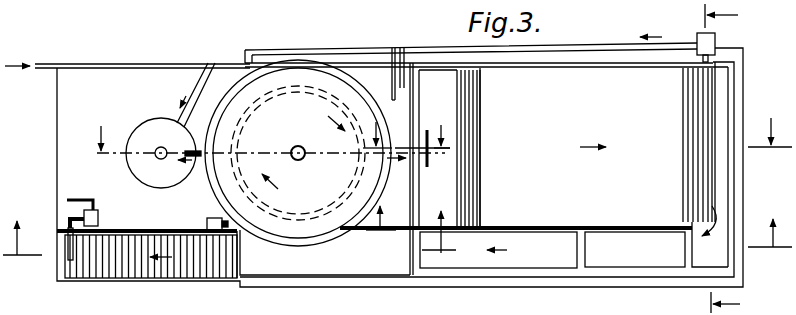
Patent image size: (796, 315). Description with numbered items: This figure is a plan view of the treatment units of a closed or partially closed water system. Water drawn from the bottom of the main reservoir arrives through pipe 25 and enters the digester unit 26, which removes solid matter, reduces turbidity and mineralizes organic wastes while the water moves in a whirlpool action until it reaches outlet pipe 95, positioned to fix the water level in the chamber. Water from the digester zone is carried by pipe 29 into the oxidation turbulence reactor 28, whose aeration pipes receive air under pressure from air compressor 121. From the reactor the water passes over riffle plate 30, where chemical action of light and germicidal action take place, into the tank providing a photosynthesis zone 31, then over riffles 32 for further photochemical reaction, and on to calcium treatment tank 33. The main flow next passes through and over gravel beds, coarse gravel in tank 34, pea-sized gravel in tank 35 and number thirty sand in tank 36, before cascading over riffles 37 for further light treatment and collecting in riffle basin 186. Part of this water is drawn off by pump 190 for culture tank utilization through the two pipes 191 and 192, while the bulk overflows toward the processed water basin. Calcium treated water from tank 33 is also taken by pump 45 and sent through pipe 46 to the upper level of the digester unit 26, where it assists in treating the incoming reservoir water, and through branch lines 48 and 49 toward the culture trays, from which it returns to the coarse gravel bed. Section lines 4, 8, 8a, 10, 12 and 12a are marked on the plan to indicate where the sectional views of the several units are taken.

The pipe 25 is at (162, 64).
The digester unit 26 is at (240, 94).
The pipe 46 is at (262, 56).
The pump 45 is at (714, 44).
The section line 10 is at (731, 159).
The section line 8 / pulley 8 is at (272, 144).
The section line 8a is at (574, 124).
The pipe 29 is at (421, 143).
The outlet pipe 95 is at (297, 147).
The branch line 49 is at (403, 67).
The branch line 48 is at (393, 83).
The oxidation turbulence reactor 28 is at (443, 87).
The riffle plate 30 is at (468, 108).
The photosynthesis zone 31 is at (616, 94).
The riffles 32 is at (683, 105).
The calcium treatment tank 33 is at (718, 103).
The section line 12 is at (579, 221).
The section line 12a is at (229, 225).
The section line 4 is at (393, 210).
The pump 190 is at (98, 222).
The pipe 191 is at (72, 199).
The pipe 192 is at (92, 200).
The riffle basin 186 is at (72, 266).
The air compressor 121 is at (207, 220).
The riffles 37 is at (212, 268).
The tank 36 is at (330, 261).
The tank 35 is at (549, 259).
The tank 34 is at (644, 259).